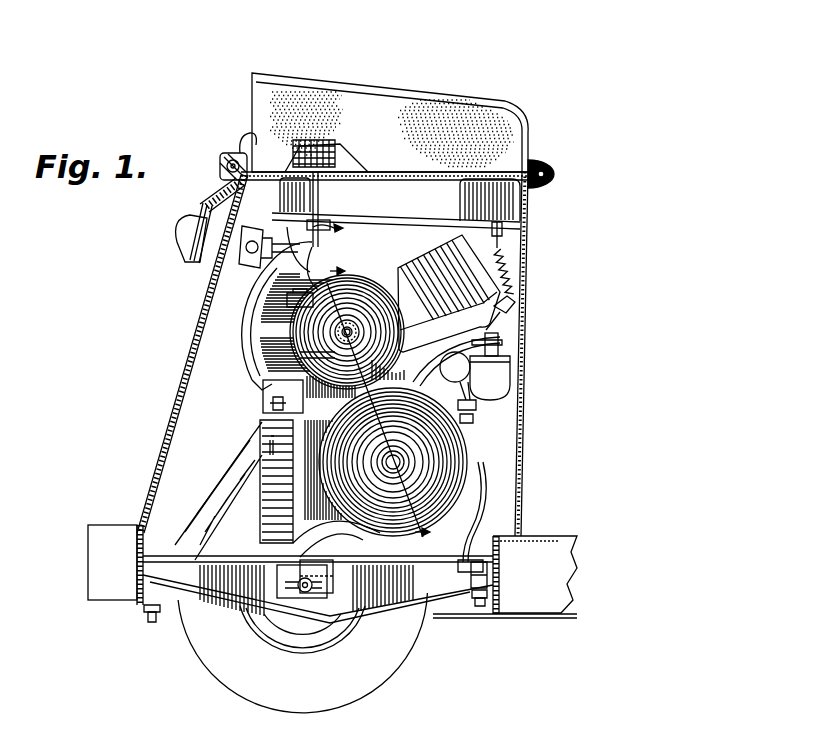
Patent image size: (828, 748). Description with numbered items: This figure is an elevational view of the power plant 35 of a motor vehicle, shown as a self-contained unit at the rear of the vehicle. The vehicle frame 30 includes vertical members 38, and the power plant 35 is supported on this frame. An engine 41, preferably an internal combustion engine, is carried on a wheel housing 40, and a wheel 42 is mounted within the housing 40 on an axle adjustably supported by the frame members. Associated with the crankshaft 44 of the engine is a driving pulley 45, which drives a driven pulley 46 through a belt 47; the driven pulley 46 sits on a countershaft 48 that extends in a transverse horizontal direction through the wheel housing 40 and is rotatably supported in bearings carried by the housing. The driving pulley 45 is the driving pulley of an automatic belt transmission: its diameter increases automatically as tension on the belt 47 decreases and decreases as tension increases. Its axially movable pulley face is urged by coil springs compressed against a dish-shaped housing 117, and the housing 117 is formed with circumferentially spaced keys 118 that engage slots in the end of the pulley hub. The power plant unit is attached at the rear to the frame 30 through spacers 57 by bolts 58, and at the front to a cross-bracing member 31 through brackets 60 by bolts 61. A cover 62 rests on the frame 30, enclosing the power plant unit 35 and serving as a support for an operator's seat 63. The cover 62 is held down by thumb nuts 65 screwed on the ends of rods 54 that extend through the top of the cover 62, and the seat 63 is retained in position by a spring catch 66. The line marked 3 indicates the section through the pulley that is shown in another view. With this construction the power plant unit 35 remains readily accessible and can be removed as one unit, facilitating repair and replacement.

The section line 3- 3 is at (383, 407).
The frame 30 is at (527, 618).
The cross-bracing member 31 is at (488, 568).
The power plant 35 is at (243, 348).
The vertical members 38 is at (265, 528).
The wheel housing 40 is at (200, 470).
The engine 41 is at (422, 247).
The wheel 42 is at (220, 675).
The crankshaft 44 is at (350, 327).
The driving pulley 45 is at (307, 335).
The driven pulley 46 is at (447, 498).
The belt 47 is at (327, 390).
The countershaft 48 is at (400, 460).
The rods 54 is at (320, 193).
The spacers 57 is at (160, 620).
The bolts 58 is at (147, 617).
The brackets 60 is at (478, 614).
The bolts 61 is at (470, 614).
The cover 62 is at (180, 377).
The operator's seat 63 is at (452, 100).
The thumb nuts 65 is at (317, 163).
The spring catch 66 is at (227, 152).
The dish-shaped housing 117 is at (313, 352).
The keys 118 is at (333, 327).